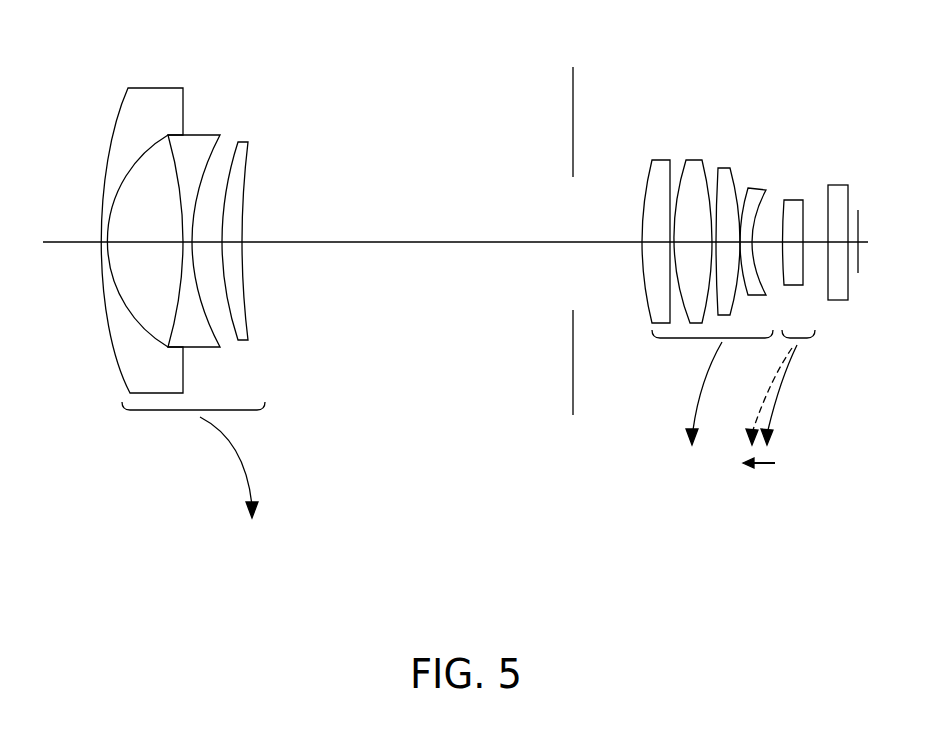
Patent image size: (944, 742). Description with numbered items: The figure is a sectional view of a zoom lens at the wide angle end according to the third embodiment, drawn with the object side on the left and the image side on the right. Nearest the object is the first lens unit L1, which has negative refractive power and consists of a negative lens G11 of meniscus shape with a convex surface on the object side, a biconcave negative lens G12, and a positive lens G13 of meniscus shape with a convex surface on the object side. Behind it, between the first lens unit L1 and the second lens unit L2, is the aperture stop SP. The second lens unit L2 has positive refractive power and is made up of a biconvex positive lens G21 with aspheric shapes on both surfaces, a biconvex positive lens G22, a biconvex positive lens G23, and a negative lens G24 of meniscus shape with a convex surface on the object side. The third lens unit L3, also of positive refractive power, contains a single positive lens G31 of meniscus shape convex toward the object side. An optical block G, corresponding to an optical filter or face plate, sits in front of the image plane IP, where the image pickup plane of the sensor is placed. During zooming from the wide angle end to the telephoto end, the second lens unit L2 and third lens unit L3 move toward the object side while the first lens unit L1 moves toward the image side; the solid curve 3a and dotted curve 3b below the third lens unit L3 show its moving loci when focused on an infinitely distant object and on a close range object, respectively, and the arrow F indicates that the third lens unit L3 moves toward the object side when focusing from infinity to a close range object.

The first lens unit L1 is at (263, 53).
The negative lens G11 is at (155, 102).
The negative lens G12 is at (193, 147).
The positive lens G13 is at (237, 142).
The aperture stop SP is at (572, 67).
The second lens unit L2 is at (777, 104).
The positive lens G21 is at (665, 183).
The positive lens G22 is at (700, 188).
The positive lens G23 is at (728, 202).
The negative lens G24 is at (755, 187).
The third lens unit L3 is at (788, 104).
The positive lens G31 is at (797, 200).
The curve (solid line) 3a is at (781, 395).
The curve (dotted line) 3b is at (762, 396).
The arrow F is at (759, 473).
The optical block G is at (825, 177).
The image plane IP is at (860, 208).